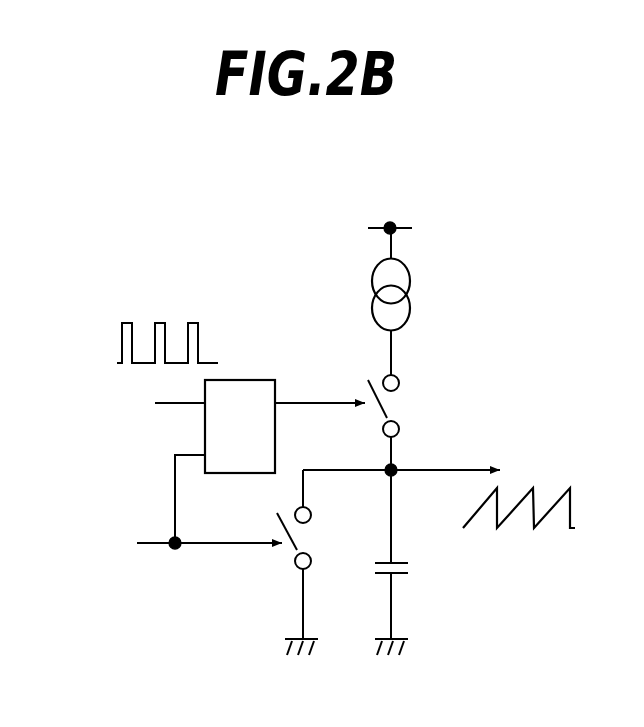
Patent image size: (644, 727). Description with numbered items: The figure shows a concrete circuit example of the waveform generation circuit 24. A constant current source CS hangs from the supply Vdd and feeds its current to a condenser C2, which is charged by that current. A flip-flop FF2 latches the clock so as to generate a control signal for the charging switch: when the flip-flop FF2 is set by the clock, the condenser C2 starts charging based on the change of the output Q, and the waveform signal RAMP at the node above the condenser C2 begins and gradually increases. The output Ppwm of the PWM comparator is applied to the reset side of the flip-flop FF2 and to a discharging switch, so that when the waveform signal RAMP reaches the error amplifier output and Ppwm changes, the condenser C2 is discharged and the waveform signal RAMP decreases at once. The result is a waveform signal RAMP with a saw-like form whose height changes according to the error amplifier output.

The waveform generation circuit 24 is at (463, 328).
The power supply voltage Vdd is at (361, 233).
The constant current source CS is at (368, 295).
The waveform signal RAMP is at (439, 476).
The condenser C2 is at (411, 557).
The flip-flop FF2 is at (255, 411).
The output of the PWM comparator Ppwm is at (170, 540).